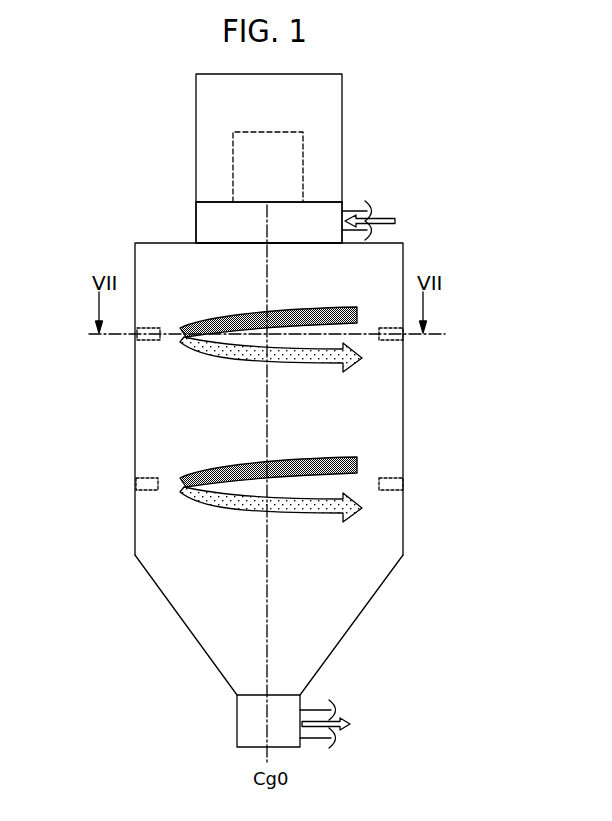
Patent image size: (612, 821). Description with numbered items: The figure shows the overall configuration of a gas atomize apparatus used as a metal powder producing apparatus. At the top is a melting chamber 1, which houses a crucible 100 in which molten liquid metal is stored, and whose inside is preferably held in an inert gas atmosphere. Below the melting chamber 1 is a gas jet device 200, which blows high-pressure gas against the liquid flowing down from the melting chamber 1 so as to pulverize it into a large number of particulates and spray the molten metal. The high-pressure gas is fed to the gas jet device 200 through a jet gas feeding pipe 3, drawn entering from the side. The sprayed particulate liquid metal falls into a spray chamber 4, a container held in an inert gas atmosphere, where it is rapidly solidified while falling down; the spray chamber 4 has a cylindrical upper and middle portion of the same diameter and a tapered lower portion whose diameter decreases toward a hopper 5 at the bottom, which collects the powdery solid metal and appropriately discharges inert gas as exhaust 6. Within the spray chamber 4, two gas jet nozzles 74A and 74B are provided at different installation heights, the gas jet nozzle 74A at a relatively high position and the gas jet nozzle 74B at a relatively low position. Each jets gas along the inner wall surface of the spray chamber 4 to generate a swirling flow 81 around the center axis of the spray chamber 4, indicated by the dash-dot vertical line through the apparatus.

The melting chamber 1 is at (342, 138).
The crucible 100 is at (303, 187).
The gas jet device 200 is at (197, 233).
The jet gas feeding pipe 3 is at (379, 220).
The spray chamber 4 is at (403, 420).
The hopper 5 is at (237, 727).
The exhaust 6 is at (336, 724).
The gas jet nozzle 74A is at (150, 327).
The gas jet nozzle 74B is at (150, 477).
The swirling flow 81 is at (263, 314).